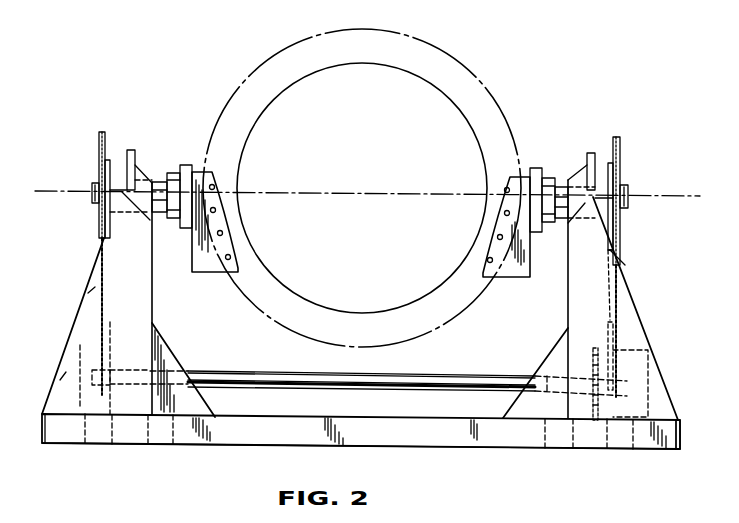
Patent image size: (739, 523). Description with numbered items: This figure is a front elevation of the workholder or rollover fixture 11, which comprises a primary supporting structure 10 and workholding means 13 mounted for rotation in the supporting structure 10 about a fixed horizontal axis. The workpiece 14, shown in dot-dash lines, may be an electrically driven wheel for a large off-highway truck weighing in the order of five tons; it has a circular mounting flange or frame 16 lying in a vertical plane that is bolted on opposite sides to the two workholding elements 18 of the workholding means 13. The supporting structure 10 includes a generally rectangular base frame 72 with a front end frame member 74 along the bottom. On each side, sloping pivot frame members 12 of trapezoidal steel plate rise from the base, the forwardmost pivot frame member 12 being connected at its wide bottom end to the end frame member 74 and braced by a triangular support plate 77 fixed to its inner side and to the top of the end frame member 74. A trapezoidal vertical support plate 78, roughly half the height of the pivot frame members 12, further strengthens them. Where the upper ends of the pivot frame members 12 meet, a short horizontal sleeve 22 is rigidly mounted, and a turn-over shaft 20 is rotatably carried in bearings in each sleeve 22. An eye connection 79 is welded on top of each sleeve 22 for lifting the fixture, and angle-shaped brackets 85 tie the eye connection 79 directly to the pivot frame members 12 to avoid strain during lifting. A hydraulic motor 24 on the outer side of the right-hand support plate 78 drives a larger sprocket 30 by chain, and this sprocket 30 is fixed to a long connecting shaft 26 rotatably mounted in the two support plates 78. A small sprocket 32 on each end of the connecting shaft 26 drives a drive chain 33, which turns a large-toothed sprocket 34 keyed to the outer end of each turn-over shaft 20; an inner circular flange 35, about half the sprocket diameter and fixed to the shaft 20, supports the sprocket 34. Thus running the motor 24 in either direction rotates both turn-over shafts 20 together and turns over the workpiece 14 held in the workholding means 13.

The primary supporting structure 10 is at (522, 437).
The workholder or rollover fixture 11 is at (622, 261).
The sloping pivot frame member 12 is at (137, 308).
The workholding means 13 is at (158, 192).
The workpiece 14 is at (342, 150).
The circular mounting flange or frame 16 is at (505, 135).
The workholding element 18 is at (210, 178).
The turn-over shaft 20 is at (92, 197).
The sleeve 22 is at (562, 196).
The motor 24 is at (640, 381).
The connecting shaft 26 is at (472, 371).
The sprocket 30 is at (596, 422).
The small sprocket 32 is at (98, 372).
The drive chain 33 is at (100, 236).
The large-toothed sprocket 34 is at (98, 134).
The inner circular flange 35 is at (608, 170).
The base frame 72 is at (668, 445).
The end frame member 74 is at (238, 432).
The triangular support plate 77 is at (528, 408).
The vertical support plate 78 is at (609, 337).
The eye connection 79 is at (586, 185).
The angle-shaped bracket 85 is at (578, 216).